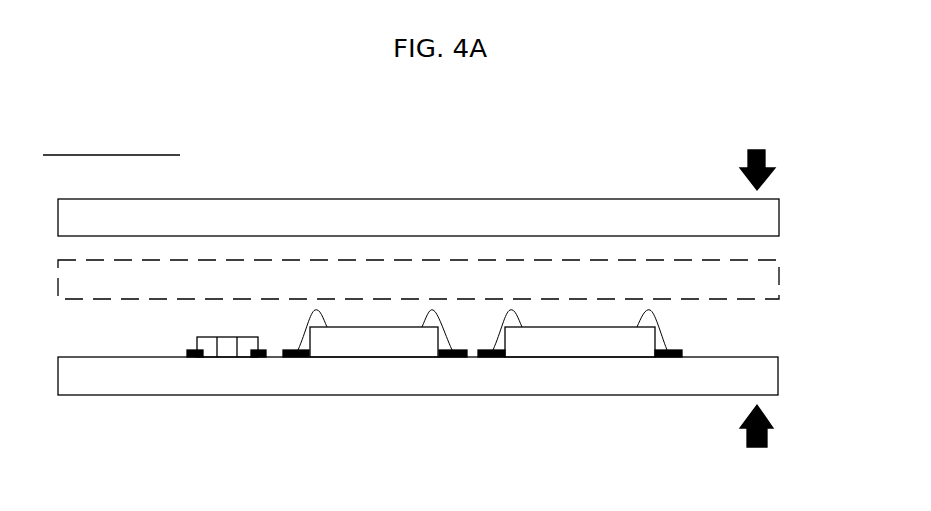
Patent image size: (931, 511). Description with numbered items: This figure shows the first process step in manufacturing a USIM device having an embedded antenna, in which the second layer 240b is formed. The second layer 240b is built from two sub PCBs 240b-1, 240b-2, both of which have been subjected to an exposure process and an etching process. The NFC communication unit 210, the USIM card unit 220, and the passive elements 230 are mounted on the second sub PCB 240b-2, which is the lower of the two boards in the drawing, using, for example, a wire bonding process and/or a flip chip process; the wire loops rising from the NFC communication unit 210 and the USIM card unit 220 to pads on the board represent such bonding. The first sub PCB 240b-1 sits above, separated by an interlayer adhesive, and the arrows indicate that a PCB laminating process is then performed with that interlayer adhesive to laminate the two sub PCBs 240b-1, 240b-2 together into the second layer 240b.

The second layer 240b is at (143, 122).
The first sub PCB 240b-1 is at (338, 217).
The second sub PCB 240b-2 is at (430, 390).
The passive elements 230 is at (223, 348).
The NFC communication unit 210 is at (348, 352).
The USIM card unit 220 is at (550, 352).